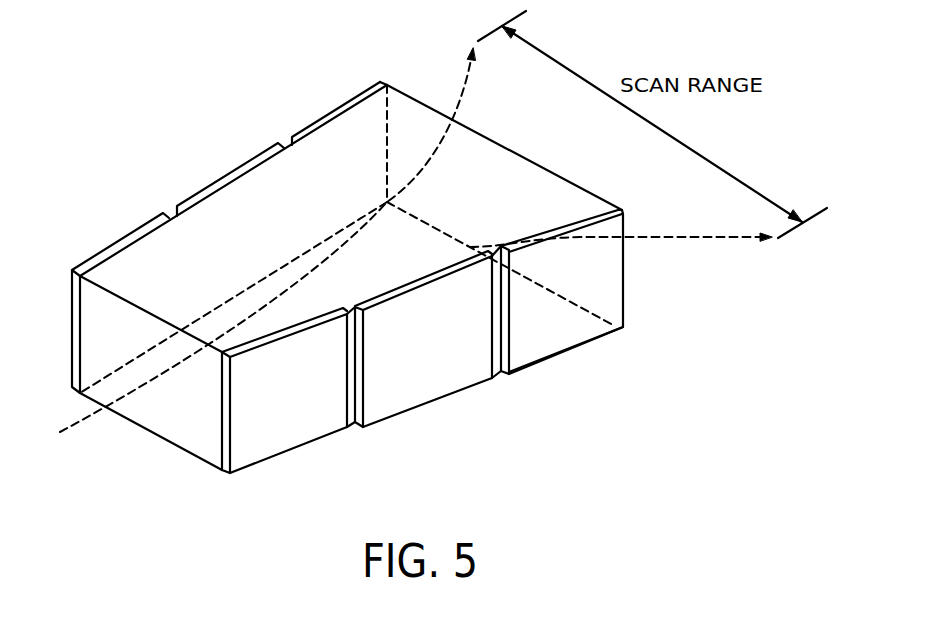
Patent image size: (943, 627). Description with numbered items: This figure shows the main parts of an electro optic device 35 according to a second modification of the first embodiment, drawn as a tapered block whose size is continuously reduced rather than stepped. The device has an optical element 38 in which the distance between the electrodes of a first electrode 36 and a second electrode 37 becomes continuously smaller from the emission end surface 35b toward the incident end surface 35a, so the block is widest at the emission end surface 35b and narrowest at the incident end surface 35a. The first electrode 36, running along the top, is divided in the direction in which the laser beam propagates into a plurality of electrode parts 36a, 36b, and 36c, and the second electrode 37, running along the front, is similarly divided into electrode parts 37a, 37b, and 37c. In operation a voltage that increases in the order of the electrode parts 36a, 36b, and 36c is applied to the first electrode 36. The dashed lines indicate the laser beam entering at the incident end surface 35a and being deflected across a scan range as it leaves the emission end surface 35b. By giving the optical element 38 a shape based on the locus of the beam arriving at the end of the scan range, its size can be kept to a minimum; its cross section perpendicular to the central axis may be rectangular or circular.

The electro optic device 35 is at (187, 99).
The incident end surface 35a is at (180, 432).
The emission end surface 35b is at (625, 280).
The first electrode 36 is at (226, 147).
The electrode part 36a is at (125, 245).
The electrode part 36b is at (233, 175).
The electrode part 36c is at (370, 83).
The second electrode 37 is at (422, 363).
The electrode part 37a is at (288, 442).
The electrode part 37b is at (423, 397).
The electrode part 37c is at (593, 333).
The optical element 38 is at (570, 195).